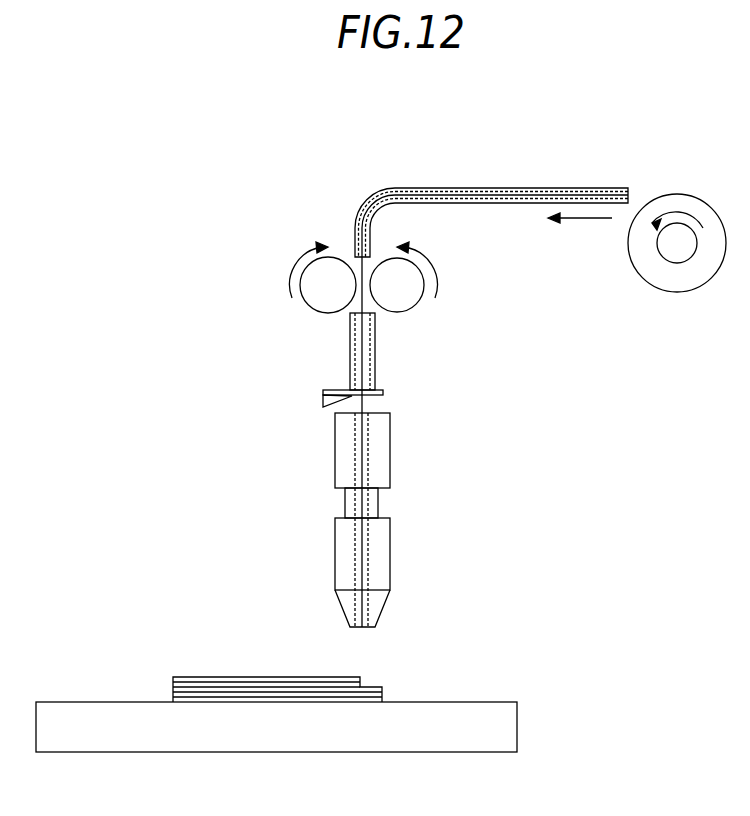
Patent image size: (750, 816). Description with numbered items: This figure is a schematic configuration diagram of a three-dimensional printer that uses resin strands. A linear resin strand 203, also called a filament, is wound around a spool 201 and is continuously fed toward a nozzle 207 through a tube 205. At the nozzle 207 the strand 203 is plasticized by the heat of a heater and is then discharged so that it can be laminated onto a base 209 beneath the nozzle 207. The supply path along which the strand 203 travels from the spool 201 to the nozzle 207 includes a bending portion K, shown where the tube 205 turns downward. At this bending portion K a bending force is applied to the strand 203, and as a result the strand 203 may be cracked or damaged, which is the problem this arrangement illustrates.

The spool 201 is at (675, 291).
The linear resin strand 203 is at (364, 397).
The tube 205 is at (513, 188).
The nozzle 207 is at (335, 555).
The base 209 is at (493, 702).
The bending portion K is at (363, 204).